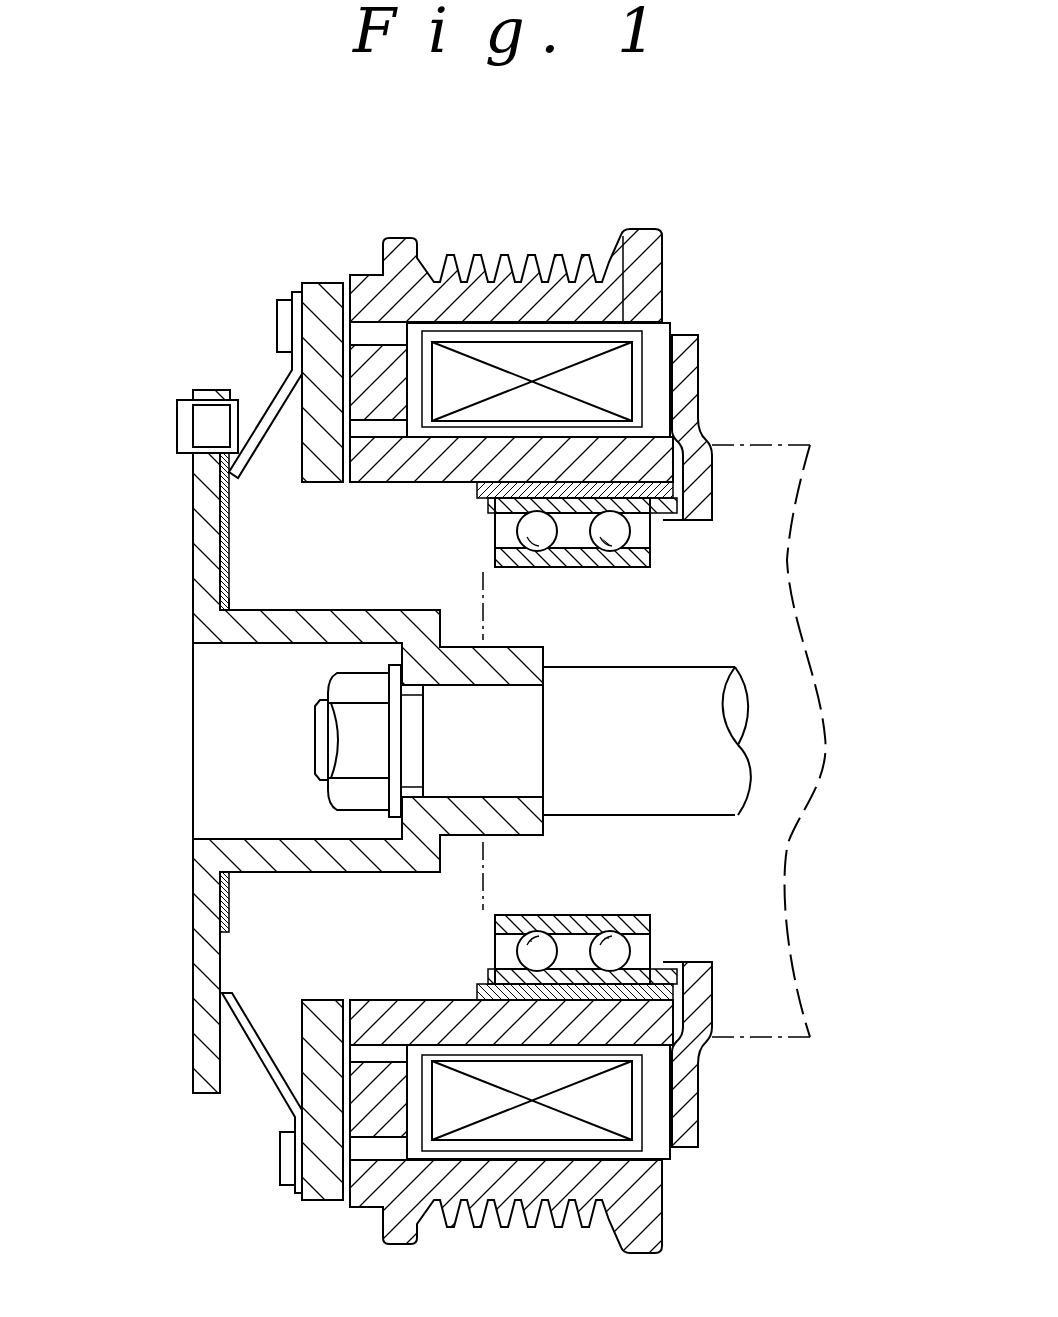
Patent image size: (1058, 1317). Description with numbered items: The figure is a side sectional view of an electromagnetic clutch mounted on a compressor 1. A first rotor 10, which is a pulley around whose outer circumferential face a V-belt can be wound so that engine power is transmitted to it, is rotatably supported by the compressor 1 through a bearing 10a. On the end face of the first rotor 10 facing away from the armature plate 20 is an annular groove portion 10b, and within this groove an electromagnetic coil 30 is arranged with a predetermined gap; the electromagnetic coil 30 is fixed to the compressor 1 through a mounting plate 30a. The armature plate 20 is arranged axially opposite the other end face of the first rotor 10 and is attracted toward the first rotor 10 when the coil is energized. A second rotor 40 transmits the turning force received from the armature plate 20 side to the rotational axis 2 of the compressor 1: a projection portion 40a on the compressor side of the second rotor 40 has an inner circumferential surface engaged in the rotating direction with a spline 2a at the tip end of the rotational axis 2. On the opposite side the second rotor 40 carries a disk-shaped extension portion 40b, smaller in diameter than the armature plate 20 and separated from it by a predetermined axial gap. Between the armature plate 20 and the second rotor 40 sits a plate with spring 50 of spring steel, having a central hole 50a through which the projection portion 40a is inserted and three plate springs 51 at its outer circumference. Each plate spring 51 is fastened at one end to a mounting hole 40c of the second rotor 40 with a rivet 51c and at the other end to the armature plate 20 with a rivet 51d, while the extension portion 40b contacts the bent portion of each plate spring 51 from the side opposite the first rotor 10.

The compressor 1 is at (773, 445).
The rotational axis 2 is at (663, 786).
The spline 2a is at (508, 758).
The first rotor 10 is at (401, 255).
The bearing 10a is at (653, 553).
The annular groove portion 10b is at (647, 313).
The armature plate 20 is at (314, 295).
The electromagnetic coil 30 is at (607, 1108).
The mounting plate 30a is at (685, 1123).
The second rotor 40 is at (302, 706).
The projection portion 40a is at (455, 663).
The extension portion 40b is at (200, 524).
The mounting hole 40c is at (200, 404).
The plate with spring 50 is at (299, 696).
The hole 50a is at (232, 604).
The plate spring 51 is at (236, 706).
The rivet 51c is at (184, 422).
The rivet 51d is at (285, 311).